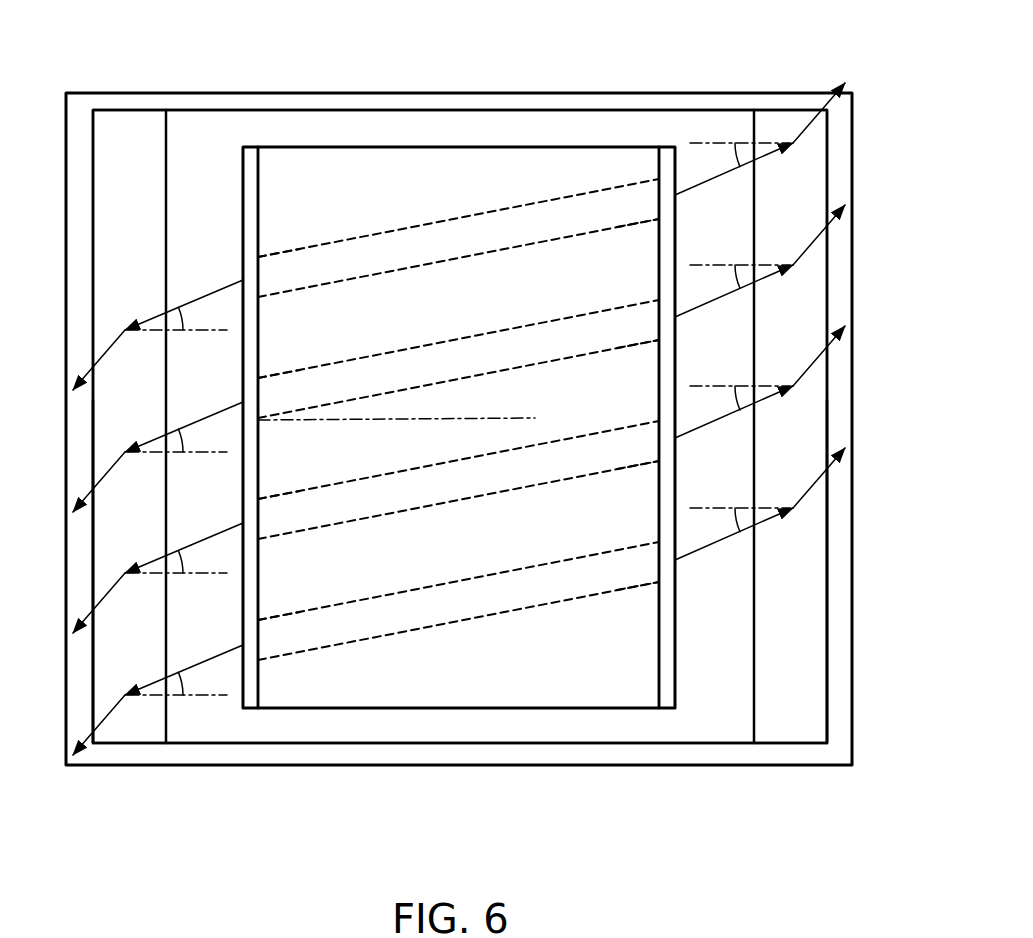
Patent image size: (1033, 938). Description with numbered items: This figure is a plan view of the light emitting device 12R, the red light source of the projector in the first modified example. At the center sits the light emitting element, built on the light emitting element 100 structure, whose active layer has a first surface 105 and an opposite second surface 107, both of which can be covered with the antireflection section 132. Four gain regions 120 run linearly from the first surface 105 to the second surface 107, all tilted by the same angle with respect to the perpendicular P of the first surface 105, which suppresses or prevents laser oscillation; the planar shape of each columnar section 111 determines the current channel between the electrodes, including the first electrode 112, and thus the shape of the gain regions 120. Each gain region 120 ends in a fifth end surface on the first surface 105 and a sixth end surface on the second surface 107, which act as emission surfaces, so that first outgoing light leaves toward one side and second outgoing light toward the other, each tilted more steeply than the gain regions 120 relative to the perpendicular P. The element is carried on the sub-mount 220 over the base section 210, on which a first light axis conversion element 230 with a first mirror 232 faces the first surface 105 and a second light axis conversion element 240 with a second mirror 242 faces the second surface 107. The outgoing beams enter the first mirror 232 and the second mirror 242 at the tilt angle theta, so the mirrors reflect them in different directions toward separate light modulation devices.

The light emitting device 12R is at (790, 43).
The light emitting element 100 is at (573, 72).
The first surface 105 is at (258, 193).
The second surface 107 is at (664, 166).
The columnar section 111 is at (458, 410).
The first electrode 112 is at (614, 672).
The gain region 120 is at (466, 232).
The antireflection section 132 is at (253, 157).
The base section 210 is at (84, 107).
The sub-mount 220 is at (421, 124).
The first light axis conversion element 230 is at (136, 122).
The first mirror 232 is at (140, 680).
The second light axis conversion element 240 is at (785, 730).
The second mirror 242 is at (806, 602).
The perpendicular P is at (405, 420).